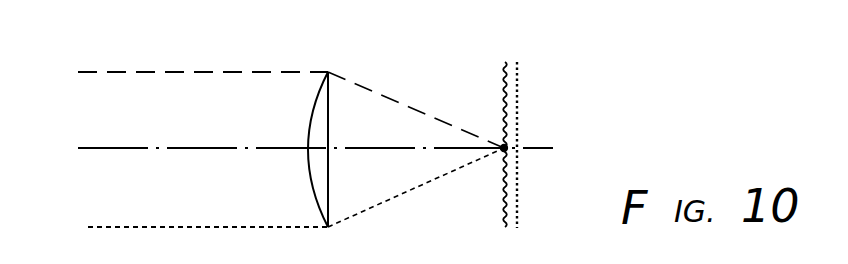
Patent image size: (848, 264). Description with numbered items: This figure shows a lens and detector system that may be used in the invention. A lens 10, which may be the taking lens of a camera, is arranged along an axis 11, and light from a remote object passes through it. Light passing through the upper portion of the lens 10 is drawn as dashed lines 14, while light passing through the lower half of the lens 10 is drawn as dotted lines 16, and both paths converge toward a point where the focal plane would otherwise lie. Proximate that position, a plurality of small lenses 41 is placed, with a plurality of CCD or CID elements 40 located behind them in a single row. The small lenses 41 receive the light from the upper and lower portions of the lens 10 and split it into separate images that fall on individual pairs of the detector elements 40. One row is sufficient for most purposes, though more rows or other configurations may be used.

The lens 10 is at (320, 92).
The axis 11 is at (107, 148).
The dashed lines 14 is at (111, 72).
The dotted lines 16 is at (118, 228).
The CCD or CID elements 40 is at (517, 103).
The small lenses 41 is at (503, 92).